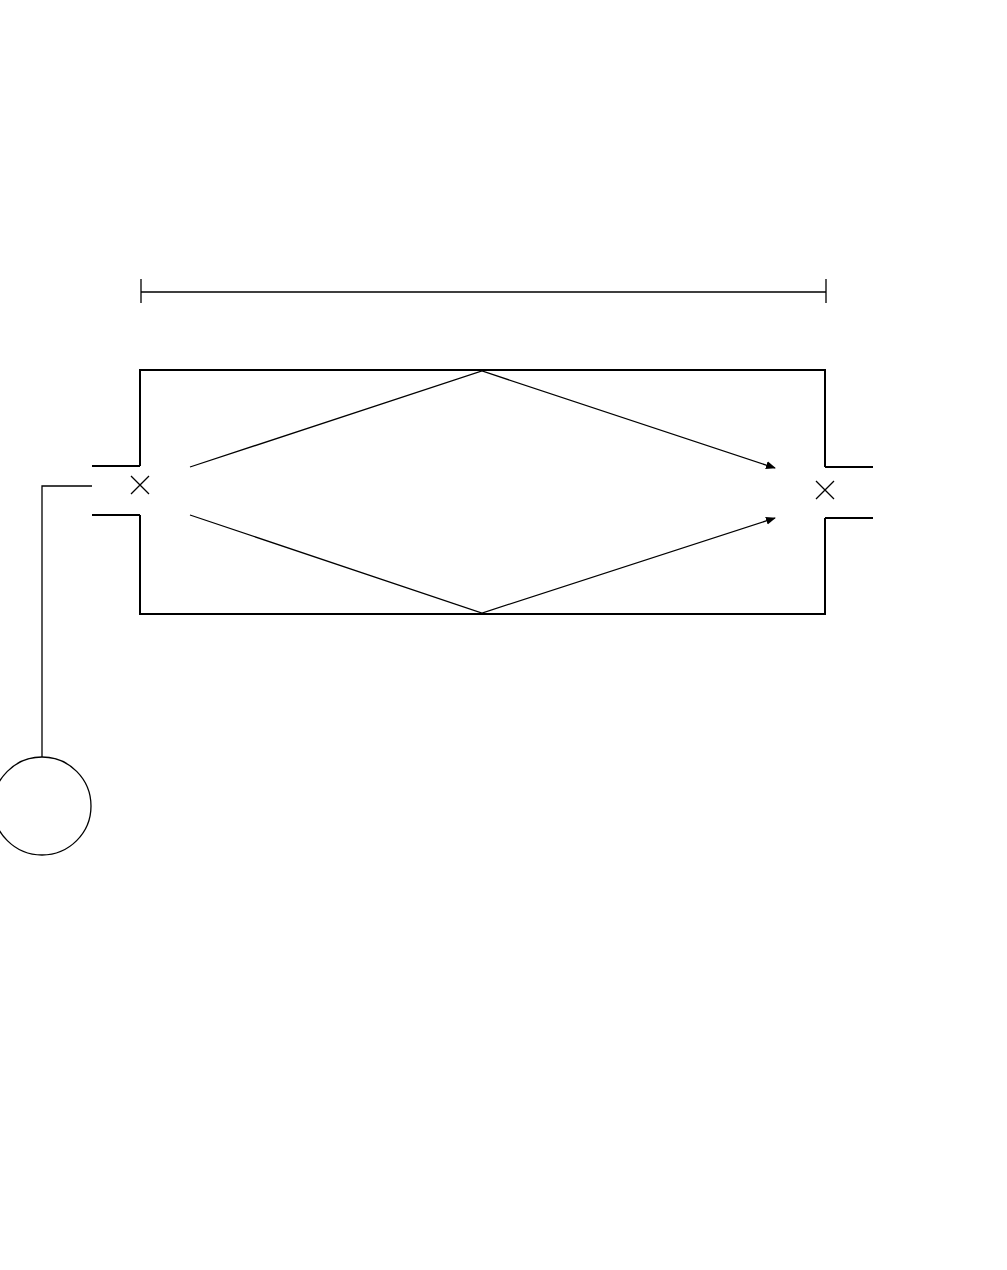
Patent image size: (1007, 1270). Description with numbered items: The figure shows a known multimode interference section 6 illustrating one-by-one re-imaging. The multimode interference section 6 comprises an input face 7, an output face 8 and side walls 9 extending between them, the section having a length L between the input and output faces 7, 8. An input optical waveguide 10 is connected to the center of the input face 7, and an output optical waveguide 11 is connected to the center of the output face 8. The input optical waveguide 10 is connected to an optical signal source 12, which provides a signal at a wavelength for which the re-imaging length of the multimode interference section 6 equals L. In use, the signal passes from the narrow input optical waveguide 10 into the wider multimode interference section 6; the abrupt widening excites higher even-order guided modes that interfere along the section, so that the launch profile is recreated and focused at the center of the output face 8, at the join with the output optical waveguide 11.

The multimode interference section 6 is at (176, 232).
The input face 7 is at (130, 572).
The output face 8 is at (832, 411).
The side walls 9 is at (548, 623).
The input optical waveguide 10 is at (108, 460).
The output optical waveguide 11 is at (860, 528).
The optical signal source 12 is at (46, 670).